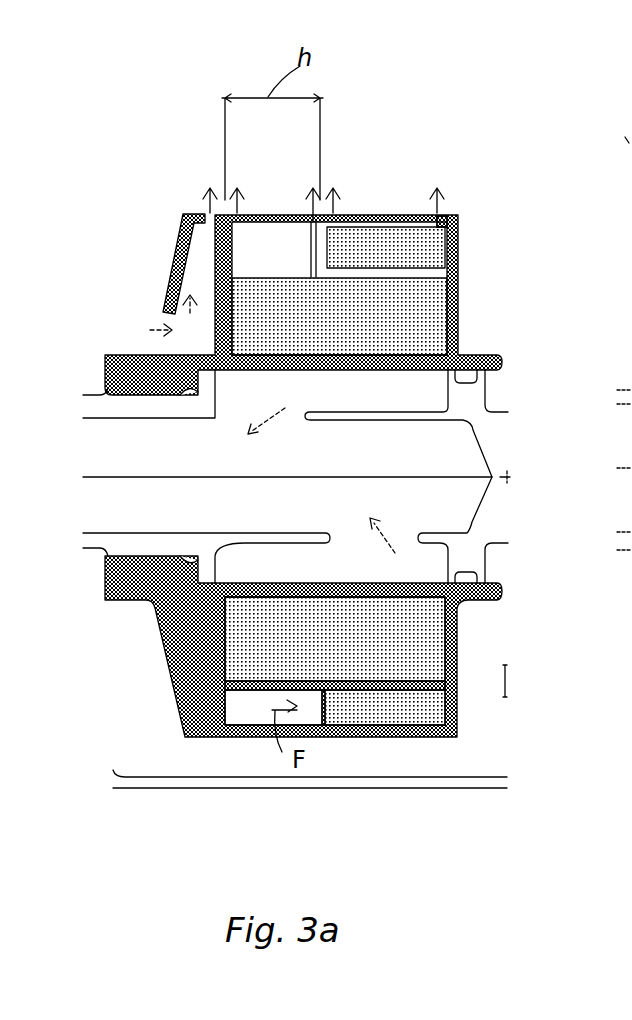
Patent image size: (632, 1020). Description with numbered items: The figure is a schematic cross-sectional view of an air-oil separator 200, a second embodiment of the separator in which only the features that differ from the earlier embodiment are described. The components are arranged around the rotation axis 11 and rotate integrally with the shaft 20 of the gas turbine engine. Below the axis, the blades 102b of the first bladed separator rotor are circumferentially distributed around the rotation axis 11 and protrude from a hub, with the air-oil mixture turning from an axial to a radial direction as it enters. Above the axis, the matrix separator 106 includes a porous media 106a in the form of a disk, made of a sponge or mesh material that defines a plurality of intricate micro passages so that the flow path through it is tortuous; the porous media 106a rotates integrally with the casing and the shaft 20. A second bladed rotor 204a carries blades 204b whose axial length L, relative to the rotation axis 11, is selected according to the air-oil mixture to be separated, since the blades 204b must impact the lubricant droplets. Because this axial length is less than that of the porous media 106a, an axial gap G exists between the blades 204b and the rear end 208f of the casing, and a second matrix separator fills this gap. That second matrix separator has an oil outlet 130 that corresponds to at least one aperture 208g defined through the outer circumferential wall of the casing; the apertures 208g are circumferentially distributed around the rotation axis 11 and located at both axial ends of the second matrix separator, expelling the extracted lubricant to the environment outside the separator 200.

The air-oil separator 200 is at (539, 92).
The matrix separator 106 is at (473, 309).
The porous media 106a is at (360, 327).
The second bladed rotor 204a is at (281, 216).
The blades 204b is at (284, 249).
The oil outlet 130 is at (458, 219).
The aperture 208g is at (524, 172).
The rear end 208f is at (472, 235).
The shaft 20 is at (118, 405).
The rotation axis 11 is at (189, 477).
The blades 102b is at (205, 720).